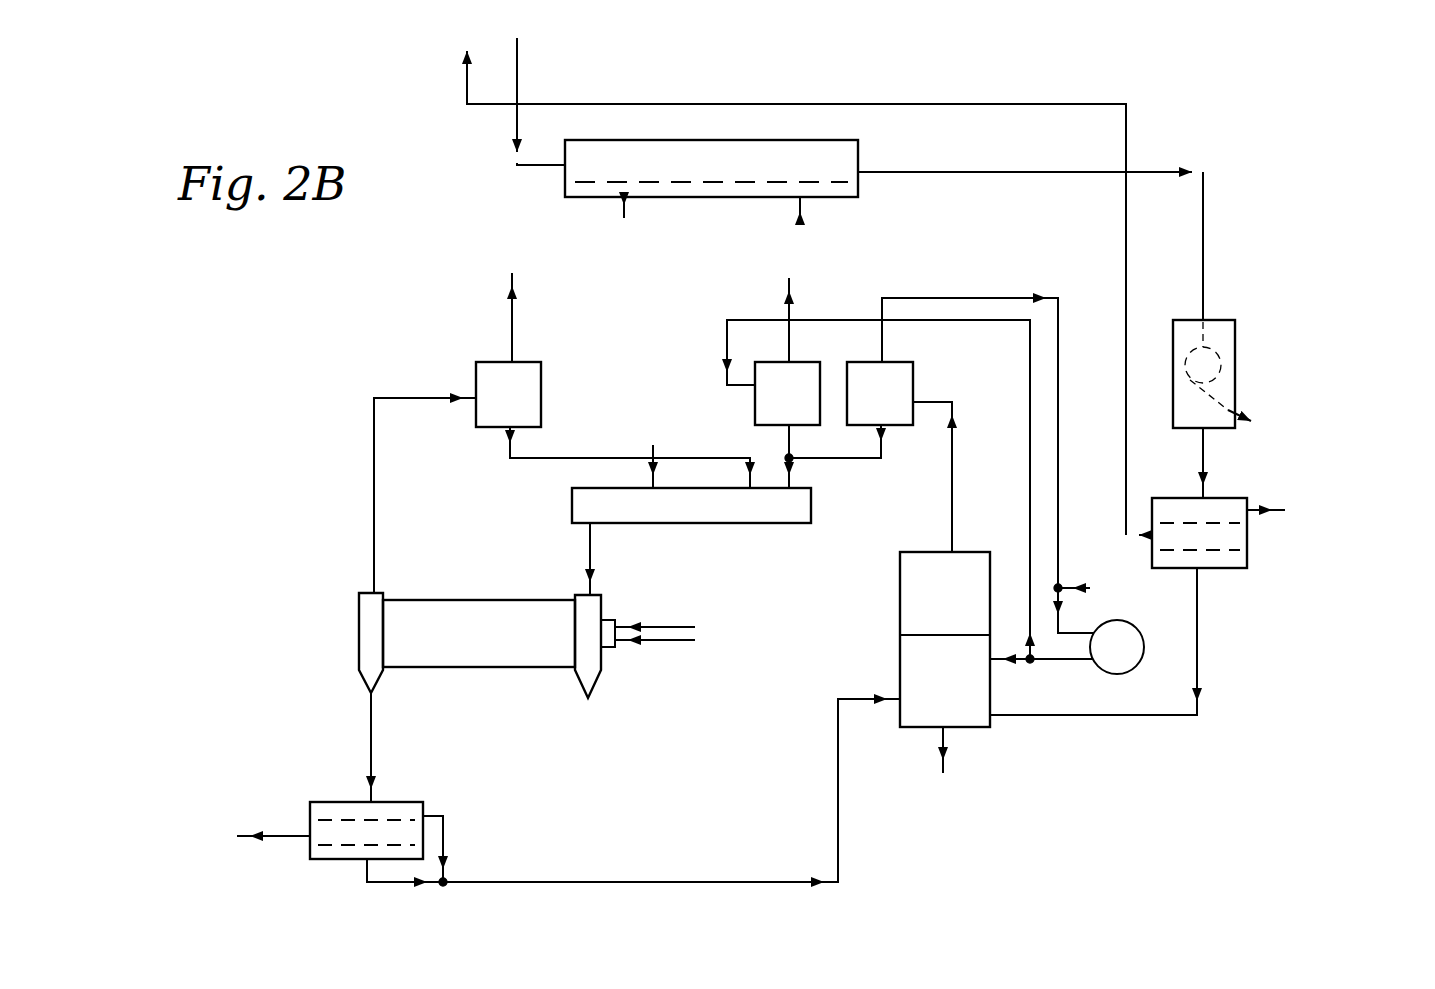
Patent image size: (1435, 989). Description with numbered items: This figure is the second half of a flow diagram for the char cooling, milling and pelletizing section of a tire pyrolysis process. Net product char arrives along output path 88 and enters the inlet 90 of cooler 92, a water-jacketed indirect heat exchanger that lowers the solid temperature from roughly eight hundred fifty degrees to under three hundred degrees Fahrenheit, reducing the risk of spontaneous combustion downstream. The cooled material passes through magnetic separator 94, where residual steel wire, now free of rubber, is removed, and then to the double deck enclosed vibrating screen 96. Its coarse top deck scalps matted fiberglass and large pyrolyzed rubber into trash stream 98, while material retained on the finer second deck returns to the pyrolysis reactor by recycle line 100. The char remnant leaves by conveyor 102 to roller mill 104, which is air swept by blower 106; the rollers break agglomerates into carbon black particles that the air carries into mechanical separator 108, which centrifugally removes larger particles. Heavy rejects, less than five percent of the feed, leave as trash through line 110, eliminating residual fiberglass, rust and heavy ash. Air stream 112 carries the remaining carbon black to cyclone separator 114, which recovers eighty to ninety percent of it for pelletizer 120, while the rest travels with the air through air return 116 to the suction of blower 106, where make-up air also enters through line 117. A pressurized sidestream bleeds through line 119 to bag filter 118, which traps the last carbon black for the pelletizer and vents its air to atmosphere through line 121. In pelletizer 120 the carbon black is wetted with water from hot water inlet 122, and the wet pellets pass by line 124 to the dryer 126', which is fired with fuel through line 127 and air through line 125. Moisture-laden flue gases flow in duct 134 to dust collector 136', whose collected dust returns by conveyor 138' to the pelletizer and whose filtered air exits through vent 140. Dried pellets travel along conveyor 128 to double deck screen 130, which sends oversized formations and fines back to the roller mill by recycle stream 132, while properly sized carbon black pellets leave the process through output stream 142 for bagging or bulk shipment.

The second portion of net product char 88 is at (517, 72).
The inlet of cooler 90 is at (565, 168).
The cooler 92 is at (712, 197).
The magnetic separator 94 is at (1238, 385).
The double deck enclosed vibrating screen 96 is at (1248, 548).
The trash stream 98 is at (1262, 510).
The recycle line 100 is at (467, 78).
The conveyor 102 is at (1197, 673).
The roller mill 104 is at (990, 683).
The blower 106 is at (1115, 675).
The mechanical separator 108 is at (970, 552).
The heavy rejects output stream 110 is at (945, 745).
The air stream 112 is at (952, 497).
The cyclone separator 114 is at (898, 426).
The air return 116 is at (998, 298).
The make-up air line 117 is at (1080, 588).
The bag filter 118 is at (755, 407).
The sidestream line 119 is at (1030, 437).
The pelletizer 120 is at (680, 523).
The vent line 121 is at (789, 301).
The hot water inlet 122 is at (650, 462).
The pellet feed line to dryer 124 is at (590, 546).
The air inlet to dryer 125 is at (640, 655).
The dryer 126' is at (487, 655).
The fuel inlet to dryer 127 is at (640, 617).
The conveyor 128 is at (375, 716).
The double deck screen 130 is at (412, 802).
The recycle stream 132 is at (790, 880).
The duct 134 is at (374, 527).
The dust collector 136' is at (417, 406).
The conveyor 138' is at (595, 468).
The vent 140 is at (512, 310).
The output stream 142 is at (290, 840).